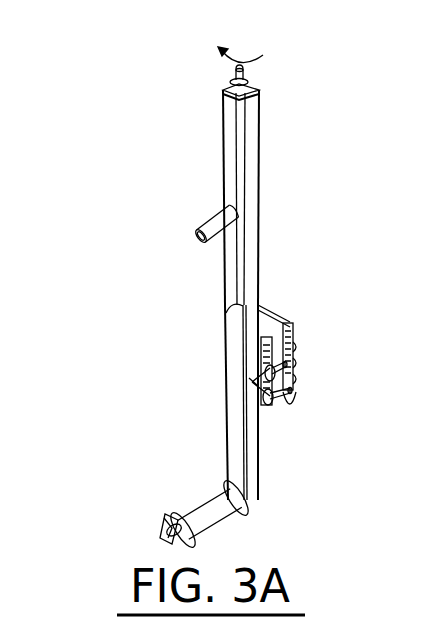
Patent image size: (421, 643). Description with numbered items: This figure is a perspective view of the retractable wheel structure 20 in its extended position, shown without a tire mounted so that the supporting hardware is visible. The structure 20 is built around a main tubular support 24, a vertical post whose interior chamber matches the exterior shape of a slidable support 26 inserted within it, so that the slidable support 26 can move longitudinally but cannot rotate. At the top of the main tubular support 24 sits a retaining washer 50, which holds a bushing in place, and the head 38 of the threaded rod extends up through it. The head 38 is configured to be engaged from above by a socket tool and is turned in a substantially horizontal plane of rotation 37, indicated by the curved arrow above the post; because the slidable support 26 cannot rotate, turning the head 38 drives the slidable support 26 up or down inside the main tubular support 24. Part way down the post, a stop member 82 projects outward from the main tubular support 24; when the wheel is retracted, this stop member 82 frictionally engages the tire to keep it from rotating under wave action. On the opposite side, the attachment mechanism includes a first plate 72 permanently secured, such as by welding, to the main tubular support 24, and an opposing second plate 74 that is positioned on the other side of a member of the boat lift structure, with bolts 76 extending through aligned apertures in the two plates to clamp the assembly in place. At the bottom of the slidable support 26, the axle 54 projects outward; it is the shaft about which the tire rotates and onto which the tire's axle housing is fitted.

The retractable structure 20 is at (110, 362).
The main tubular support 24 is at (262, 142).
The slidable support 26 is at (232, 430).
The horizontal plane of rotation 37 is at (250, 47).
The head 38 is at (244, 69).
The retaining washer 50 is at (234, 80).
The stop member 82 is at (213, 218).
The first plate 72 is at (264, 308).
The second plate 74 is at (284, 328).
The bolts 76 is at (292, 397).
The axle 54 is at (200, 508).